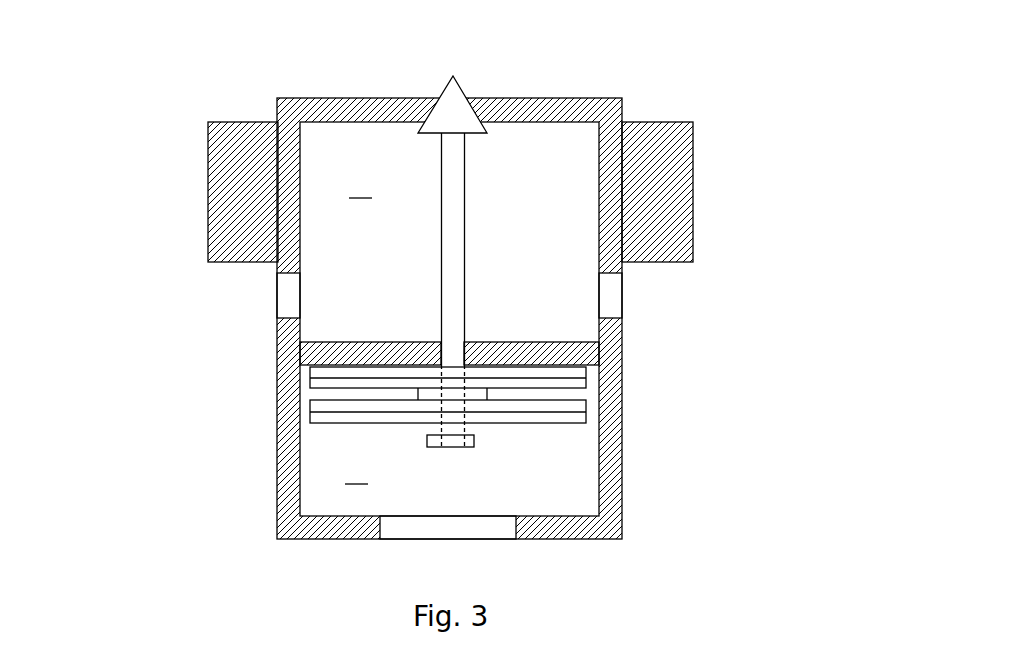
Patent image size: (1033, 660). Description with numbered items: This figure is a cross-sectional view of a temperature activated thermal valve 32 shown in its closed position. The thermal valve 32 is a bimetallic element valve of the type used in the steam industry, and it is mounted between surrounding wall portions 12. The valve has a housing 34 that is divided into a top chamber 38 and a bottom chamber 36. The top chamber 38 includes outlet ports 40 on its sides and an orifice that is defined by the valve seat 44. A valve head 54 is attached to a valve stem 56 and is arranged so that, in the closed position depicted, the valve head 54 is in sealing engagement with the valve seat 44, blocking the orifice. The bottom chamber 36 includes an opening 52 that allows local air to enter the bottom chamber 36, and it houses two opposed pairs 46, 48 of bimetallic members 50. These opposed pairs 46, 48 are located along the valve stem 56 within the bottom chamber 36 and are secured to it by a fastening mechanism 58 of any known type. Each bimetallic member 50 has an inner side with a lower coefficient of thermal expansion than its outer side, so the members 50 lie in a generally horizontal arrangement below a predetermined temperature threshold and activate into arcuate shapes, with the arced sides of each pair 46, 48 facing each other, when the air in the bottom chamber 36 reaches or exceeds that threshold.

The wall 12 is at (208, 182).
The thermal valve 32 is at (150, 126).
The housing 34 is at (275, 517).
The bottom chamber 36 is at (358, 474).
The top chamber 38 is at (362, 188).
The outlet ports 40 is at (297, 305).
The valve seat 44 is at (472, 108).
The opposed pair of bimetallic members 46 is at (310, 378).
The opposed pair of bimetallic members 48 is at (310, 412).
The bimetallic members 50 is at (557, 423).
The opening 52 is at (435, 528).
The valve head 54 is at (448, 84).
The valve stem 56 is at (467, 237).
The fastening mechanism 58 is at (468, 447).